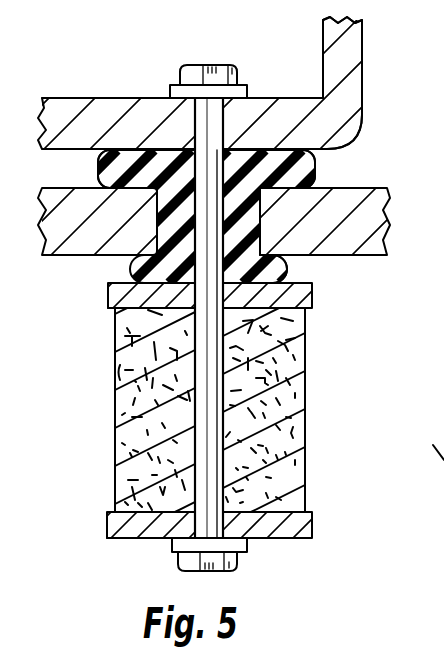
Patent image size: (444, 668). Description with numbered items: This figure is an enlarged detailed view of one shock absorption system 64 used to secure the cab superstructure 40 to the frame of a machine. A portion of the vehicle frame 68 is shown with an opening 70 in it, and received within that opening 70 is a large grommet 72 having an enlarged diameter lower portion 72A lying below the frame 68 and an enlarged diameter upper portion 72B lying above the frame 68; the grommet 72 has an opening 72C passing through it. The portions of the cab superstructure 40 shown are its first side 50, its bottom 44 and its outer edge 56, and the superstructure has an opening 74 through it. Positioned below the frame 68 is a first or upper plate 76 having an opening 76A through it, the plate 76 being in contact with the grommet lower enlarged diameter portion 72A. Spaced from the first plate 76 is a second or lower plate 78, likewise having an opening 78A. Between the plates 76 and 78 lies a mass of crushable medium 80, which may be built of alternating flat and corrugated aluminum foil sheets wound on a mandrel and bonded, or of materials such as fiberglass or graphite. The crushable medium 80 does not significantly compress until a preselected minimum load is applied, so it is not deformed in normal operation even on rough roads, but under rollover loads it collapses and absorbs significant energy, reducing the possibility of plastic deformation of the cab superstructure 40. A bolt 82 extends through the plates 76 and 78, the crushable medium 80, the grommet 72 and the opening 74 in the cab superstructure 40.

The cab superstructure 40 is at (362, 56).
The bottom 44 is at (96, 149).
The first side 50 is at (363, 93).
The outer edge 56 is at (352, 139).
The shock absorption system 64 is at (408, 309).
The vehicle frame 68 is at (364, 212).
The opening 70 is at (297, 173).
The grommet 72 is at (148, 225).
The enlarged diameter lower portion 72A is at (280, 287).
The enlarged diameter upper portion 72B is at (99, 172).
The opening 72C is at (283, 268).
The opening 74 is at (194, 117).
The first plate 76 is at (300, 326).
The opening 76A is at (196, 309).
The second plate 78 is at (302, 525).
The opening 78A is at (170, 530).
The crushable medium 80 is at (300, 417).
The bolt 82 is at (197, 393).